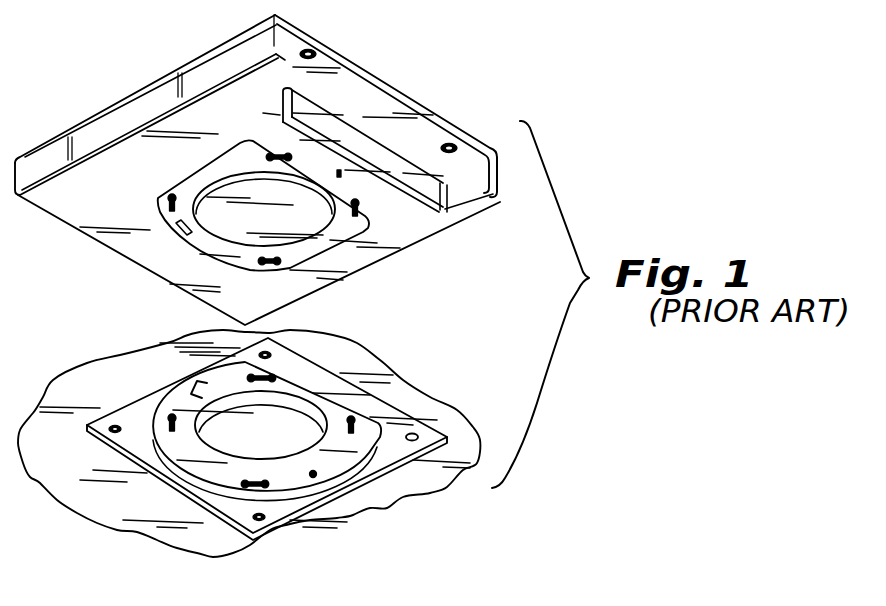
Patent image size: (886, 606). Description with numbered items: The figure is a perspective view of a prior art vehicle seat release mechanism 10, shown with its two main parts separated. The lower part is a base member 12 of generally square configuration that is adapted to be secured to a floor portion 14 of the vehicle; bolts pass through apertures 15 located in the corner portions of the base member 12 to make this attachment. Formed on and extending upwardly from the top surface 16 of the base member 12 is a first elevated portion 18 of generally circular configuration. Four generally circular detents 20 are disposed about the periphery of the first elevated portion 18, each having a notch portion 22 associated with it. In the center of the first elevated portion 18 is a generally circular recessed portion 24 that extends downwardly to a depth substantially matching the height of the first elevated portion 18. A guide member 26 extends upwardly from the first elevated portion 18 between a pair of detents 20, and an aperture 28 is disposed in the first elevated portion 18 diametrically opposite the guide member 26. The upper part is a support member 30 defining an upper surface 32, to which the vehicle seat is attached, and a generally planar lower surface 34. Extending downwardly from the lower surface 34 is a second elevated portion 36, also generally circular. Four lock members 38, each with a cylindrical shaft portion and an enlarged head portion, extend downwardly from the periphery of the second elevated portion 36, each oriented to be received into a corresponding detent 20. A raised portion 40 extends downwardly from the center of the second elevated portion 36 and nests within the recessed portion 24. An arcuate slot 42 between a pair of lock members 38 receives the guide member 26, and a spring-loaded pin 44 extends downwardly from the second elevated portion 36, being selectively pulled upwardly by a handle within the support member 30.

The vehicle seat release mechanism 10 is at (450, 75).
The base member 12 is at (425, 405).
The floor portion 14 is at (368, 506).
The apertures 15 is at (112, 432).
The top surface 16 is at (413, 457).
The first elevated portion 18 is at (200, 472).
The detents 20 is at (365, 414).
The notch portion 22 is at (170, 420).
The recessed portion 24 is at (276, 410).
The guide member 26 is at (195, 388).
The aperture 28 is at (313, 477).
The support member 30 is at (122, 84).
The upper surface 32 is at (357, 62).
The lower surface 34 is at (370, 253).
The second elevated portion 36 is at (207, 175).
The lock members 38 is at (168, 205).
The raised portion 40 is at (247, 182).
The arcuate slot 42 is at (174, 231).
The spring-loaded pin 44 is at (365, 150).